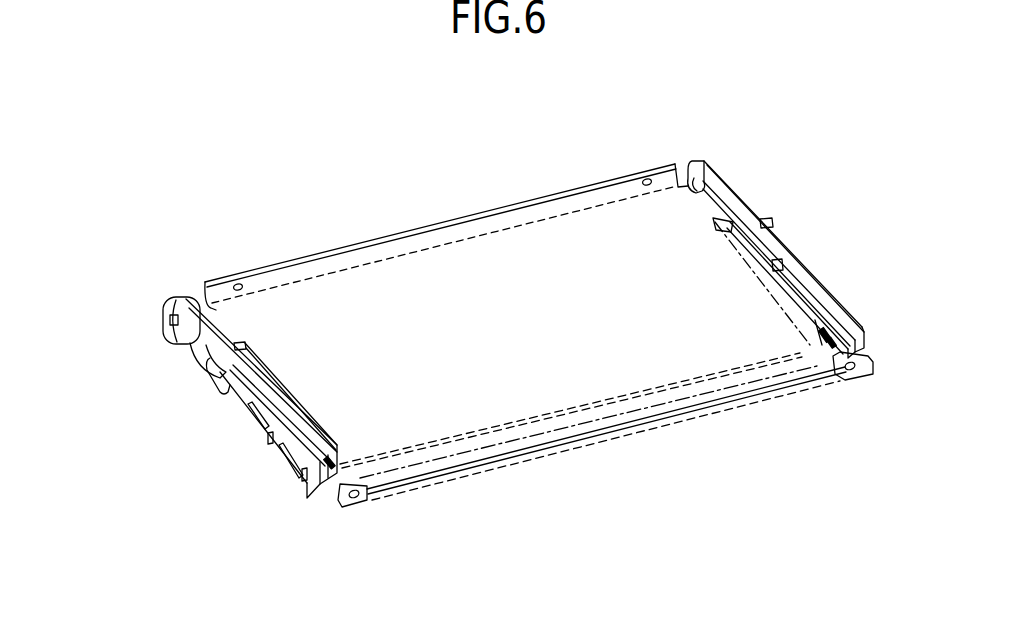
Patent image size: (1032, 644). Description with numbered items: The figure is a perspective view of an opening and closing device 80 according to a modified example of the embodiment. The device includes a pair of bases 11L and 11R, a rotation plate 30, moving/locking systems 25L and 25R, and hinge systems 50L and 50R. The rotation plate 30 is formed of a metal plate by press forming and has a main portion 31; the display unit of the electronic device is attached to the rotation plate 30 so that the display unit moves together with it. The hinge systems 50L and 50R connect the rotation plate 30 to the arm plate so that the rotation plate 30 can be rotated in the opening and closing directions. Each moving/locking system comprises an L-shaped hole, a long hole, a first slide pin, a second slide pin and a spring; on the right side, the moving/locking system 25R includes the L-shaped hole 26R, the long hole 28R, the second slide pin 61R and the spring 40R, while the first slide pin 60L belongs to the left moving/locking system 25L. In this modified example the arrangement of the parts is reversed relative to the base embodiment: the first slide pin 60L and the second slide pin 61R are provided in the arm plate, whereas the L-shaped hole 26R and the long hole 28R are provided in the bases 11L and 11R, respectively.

The opening and closing device 80 is at (596, 91).
The rotation plate 30 is at (490, 250).
The main portion 31 is at (445, 278).
The base 11L is at (226, 403).
The base 11R is at (797, 238).
The moving/locking system 25L is at (277, 481).
The moving/locking system 25R is at (841, 269).
The L-shaped hole 26R is at (262, 423).
The long hole 28R is at (290, 463).
The second slide pin 61R is at (300, 473).
The first slide pin 60L is at (270, 450).
The spring 40R is at (800, 303).
The hinge system 50L is at (152, 343).
The hinge system 50R is at (722, 164).